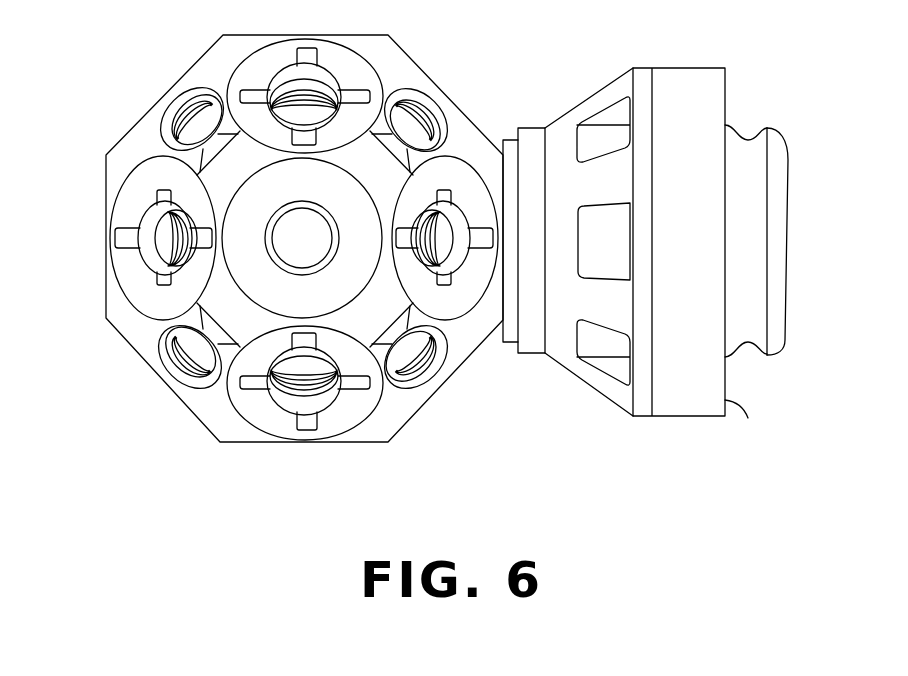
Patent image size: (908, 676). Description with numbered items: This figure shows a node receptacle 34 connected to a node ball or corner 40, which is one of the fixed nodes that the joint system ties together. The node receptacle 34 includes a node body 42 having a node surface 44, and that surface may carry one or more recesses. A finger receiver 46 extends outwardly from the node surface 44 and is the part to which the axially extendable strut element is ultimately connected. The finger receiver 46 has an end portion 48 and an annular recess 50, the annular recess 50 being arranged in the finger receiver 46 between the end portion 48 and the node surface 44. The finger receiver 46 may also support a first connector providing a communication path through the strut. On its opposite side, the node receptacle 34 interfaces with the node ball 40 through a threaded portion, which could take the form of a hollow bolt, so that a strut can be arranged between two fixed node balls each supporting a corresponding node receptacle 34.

The node receptacle 34 is at (690, 291).
The node ball or corner 40 is at (252, 483).
The node body 42 is at (587, 385).
The node surface 44 is at (725, 400).
The finger receiver 46 is at (809, 241).
The end portion 48 is at (782, 158).
The annular recess 50 is at (747, 160).